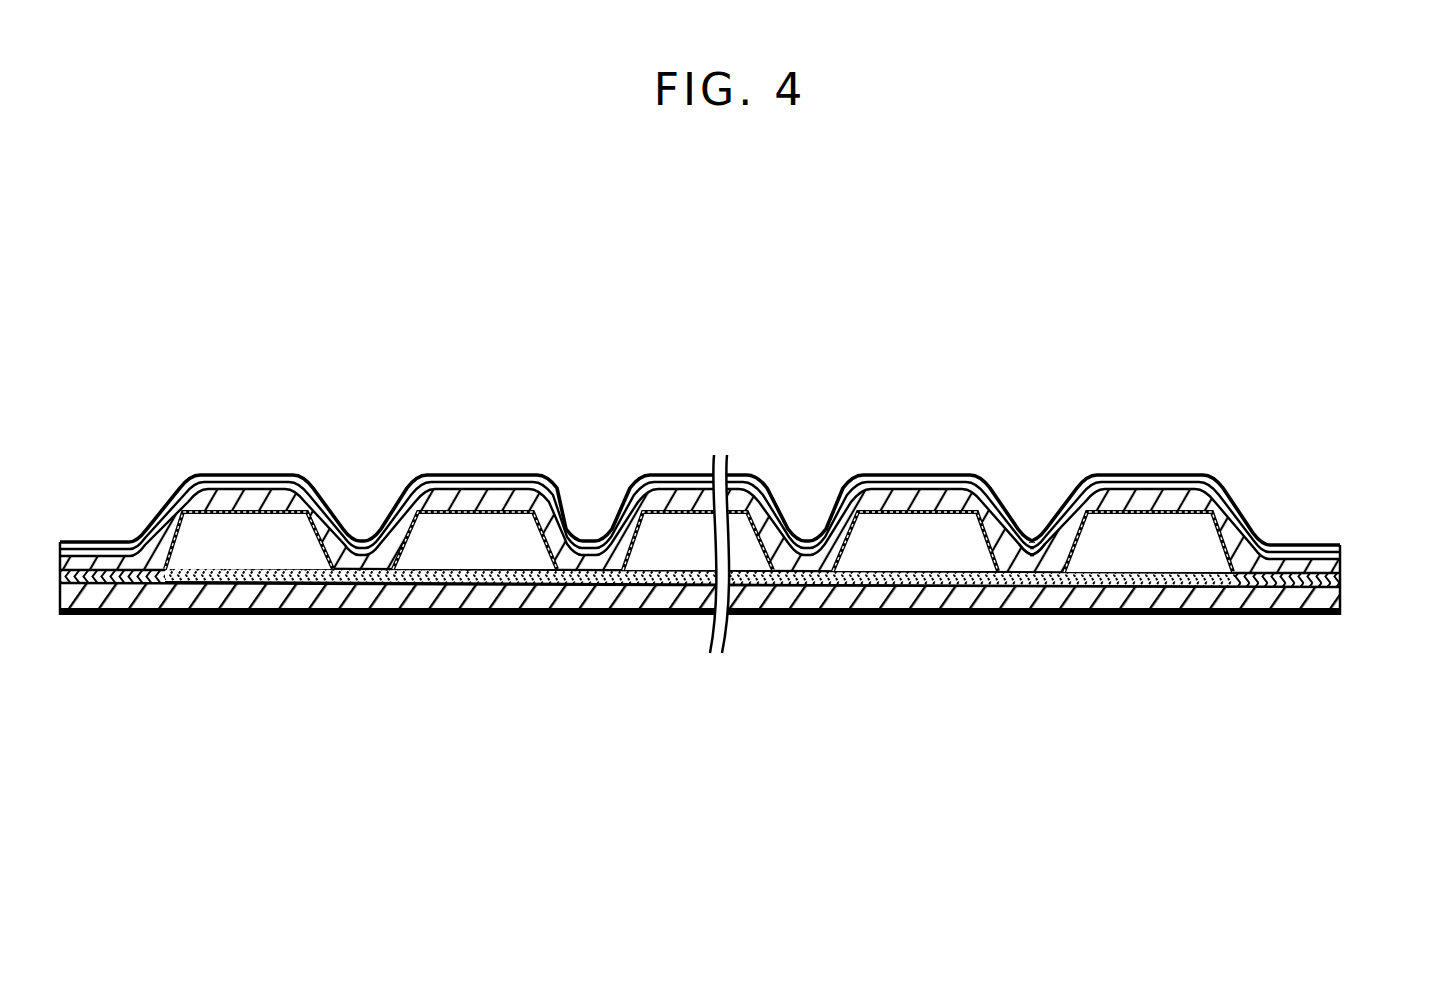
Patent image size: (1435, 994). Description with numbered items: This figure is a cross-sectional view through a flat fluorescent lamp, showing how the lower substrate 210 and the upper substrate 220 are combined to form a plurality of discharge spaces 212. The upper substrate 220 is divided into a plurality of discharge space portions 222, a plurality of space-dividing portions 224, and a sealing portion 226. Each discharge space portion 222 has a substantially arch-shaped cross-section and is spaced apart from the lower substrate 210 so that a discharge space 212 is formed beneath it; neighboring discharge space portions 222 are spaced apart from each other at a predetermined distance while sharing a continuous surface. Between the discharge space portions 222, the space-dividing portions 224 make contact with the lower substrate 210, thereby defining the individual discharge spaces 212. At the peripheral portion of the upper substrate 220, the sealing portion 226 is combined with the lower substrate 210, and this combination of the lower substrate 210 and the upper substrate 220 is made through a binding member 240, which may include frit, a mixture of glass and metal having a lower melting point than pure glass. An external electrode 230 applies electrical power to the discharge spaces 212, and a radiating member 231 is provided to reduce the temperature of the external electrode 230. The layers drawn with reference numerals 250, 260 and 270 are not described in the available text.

The lower substrate 210 is at (1337, 603).
The discharge space 212 is at (915, 543).
The upper substrate 220 is at (1338, 570).
The discharge space portion 222 is at (1105, 500).
The space-dividing portion 224 is at (1030, 556).
The sealing portion 226 is at (1283, 571).
The external electrode 230 is at (1031, 615).
The radiating member 231 is at (1123, 615).
The binding member 240 is at (1284, 611).
The first electrode 250 is at (876, 577).
The organic layer 260 is at (957, 510).
The pixel defining layer 270 is at (943, 588).